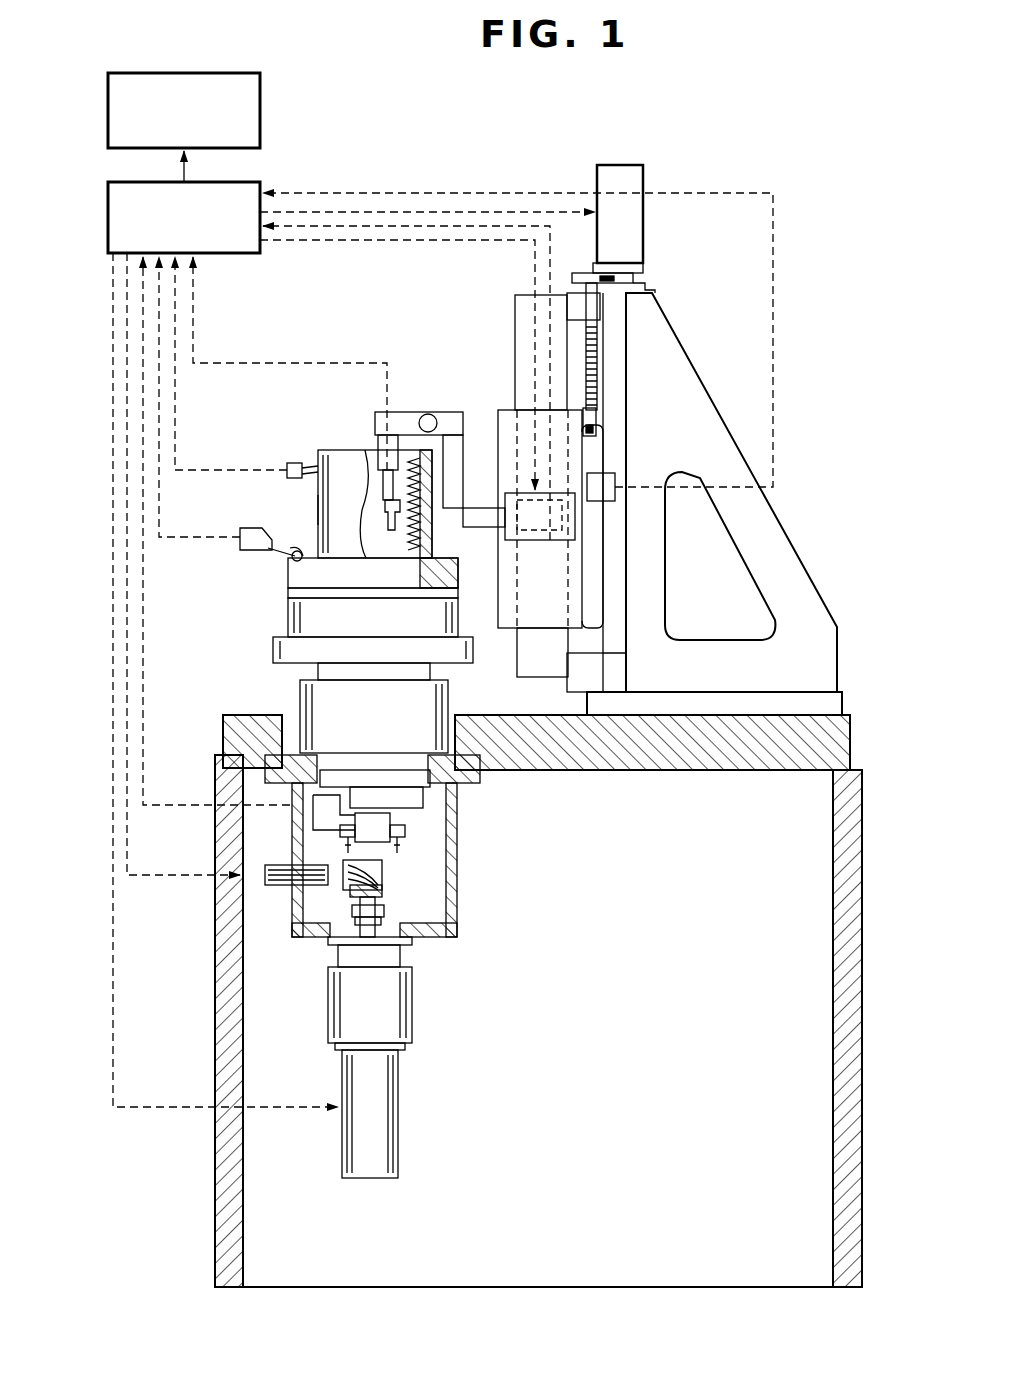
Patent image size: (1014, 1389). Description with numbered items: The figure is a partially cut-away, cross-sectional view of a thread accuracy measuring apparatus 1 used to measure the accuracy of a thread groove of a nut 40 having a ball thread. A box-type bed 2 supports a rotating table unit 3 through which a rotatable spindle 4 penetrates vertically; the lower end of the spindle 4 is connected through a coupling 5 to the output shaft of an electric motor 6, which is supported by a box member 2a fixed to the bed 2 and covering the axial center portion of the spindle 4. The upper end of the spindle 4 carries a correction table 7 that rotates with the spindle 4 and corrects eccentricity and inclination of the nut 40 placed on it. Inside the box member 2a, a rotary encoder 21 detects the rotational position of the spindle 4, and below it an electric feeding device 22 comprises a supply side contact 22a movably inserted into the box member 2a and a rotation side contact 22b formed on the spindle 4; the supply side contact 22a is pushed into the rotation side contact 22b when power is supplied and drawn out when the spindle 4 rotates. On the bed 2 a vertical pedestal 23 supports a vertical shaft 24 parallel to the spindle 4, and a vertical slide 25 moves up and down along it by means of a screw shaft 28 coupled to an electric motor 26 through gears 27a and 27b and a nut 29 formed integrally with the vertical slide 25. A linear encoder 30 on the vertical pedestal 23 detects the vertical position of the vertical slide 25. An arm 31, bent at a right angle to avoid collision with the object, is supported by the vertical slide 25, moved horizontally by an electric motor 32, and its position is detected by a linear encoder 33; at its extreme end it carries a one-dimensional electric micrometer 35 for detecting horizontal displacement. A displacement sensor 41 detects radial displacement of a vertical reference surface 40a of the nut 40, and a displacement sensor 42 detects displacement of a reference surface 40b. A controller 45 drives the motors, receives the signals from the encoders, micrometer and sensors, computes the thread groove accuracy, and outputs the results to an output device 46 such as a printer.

The thread accuracy measuring apparatus 1 is at (765, 165).
The box-type bed 2 is at (835, 742).
The box member 2a is at (441, 940).
The rotating table unit 3 is at (300, 700).
The spindle 4 is at (385, 800).
The coupling 5 is at (385, 918).
The electric motor 6 is at (388, 1083).
The correction table 7 is at (288, 618).
The rotary encoder 21 is at (408, 833).
The electric feeding device 22 is at (251, 931).
The supply side contact 22a is at (270, 888).
The rotation side contact 22b is at (340, 886).
The vertical pedestal 23 is at (812, 640).
The vertical shaft 24 is at (515, 335).
The vertical slide 25 is at (600, 568).
The electric motor 26 is at (622, 178).
The gear 27a is at (631, 279).
The gear 27b is at (582, 272).
The screw shaft 28 is at (598, 345).
The nut 29 is at (597, 425).
The linear encoder 30 is at (615, 487).
The arm 31 is at (448, 415).
The electric motor 32 is at (505, 520).
The linear encoder 33 is at (530, 530).
The electric micrometer 35 is at (378, 578).
The nut 40 is at (355, 497).
The vertical reference surface 40a is at (320, 505).
The reference surface 40b is at (300, 556).
The displacement sensor 41 is at (287, 466).
The displacement sensor 42 is at (245, 535).
The controller 45 is at (108, 196).
The output device 46 is at (108, 118).